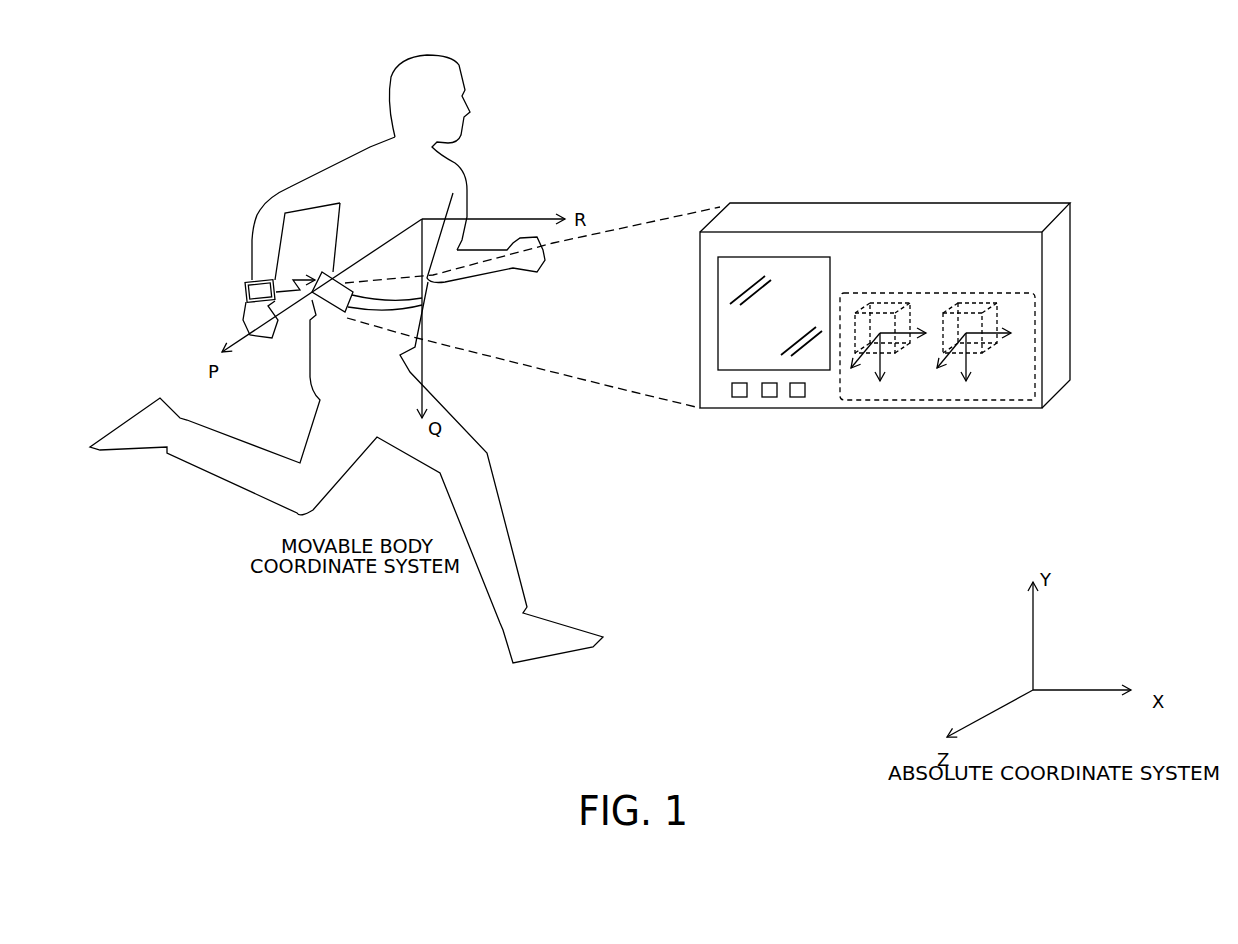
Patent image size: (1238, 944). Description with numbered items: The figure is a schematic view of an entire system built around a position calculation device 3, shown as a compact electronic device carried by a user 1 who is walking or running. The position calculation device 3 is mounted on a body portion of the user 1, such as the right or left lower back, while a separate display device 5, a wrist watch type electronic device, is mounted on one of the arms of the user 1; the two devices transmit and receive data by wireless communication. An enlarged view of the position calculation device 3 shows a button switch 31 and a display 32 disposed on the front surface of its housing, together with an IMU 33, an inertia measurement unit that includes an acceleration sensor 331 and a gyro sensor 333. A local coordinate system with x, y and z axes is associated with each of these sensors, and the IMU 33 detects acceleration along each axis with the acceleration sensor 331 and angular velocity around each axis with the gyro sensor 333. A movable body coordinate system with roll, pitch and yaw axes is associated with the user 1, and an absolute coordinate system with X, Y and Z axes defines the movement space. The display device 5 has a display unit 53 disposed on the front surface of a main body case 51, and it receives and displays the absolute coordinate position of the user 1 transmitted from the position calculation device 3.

The user 1 is at (355, 160).
The position calculation device 3 is at (328, 298).
The button switch 31 is at (738, 398).
The display 32 is at (792, 288).
The IMU 33 is at (938, 293).
The acceleration sensor 331 is at (885, 305).
The gyro sensor 333 is at (977, 305).
The display device 5 is at (238, 291).
The main body case 51 is at (250, 278).
The display unit 53 is at (247, 285).